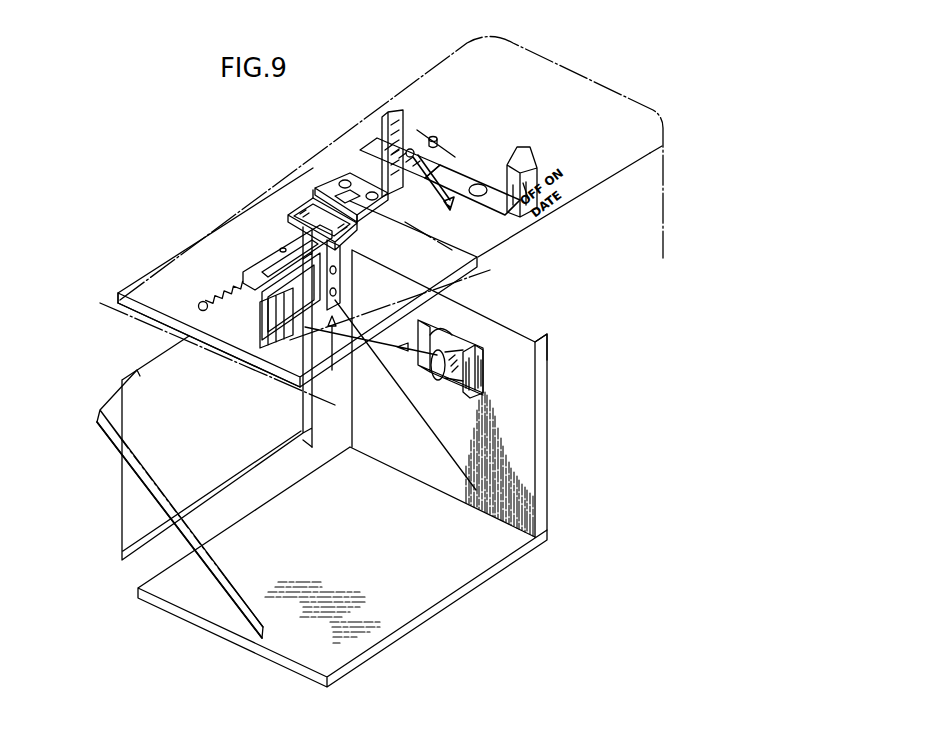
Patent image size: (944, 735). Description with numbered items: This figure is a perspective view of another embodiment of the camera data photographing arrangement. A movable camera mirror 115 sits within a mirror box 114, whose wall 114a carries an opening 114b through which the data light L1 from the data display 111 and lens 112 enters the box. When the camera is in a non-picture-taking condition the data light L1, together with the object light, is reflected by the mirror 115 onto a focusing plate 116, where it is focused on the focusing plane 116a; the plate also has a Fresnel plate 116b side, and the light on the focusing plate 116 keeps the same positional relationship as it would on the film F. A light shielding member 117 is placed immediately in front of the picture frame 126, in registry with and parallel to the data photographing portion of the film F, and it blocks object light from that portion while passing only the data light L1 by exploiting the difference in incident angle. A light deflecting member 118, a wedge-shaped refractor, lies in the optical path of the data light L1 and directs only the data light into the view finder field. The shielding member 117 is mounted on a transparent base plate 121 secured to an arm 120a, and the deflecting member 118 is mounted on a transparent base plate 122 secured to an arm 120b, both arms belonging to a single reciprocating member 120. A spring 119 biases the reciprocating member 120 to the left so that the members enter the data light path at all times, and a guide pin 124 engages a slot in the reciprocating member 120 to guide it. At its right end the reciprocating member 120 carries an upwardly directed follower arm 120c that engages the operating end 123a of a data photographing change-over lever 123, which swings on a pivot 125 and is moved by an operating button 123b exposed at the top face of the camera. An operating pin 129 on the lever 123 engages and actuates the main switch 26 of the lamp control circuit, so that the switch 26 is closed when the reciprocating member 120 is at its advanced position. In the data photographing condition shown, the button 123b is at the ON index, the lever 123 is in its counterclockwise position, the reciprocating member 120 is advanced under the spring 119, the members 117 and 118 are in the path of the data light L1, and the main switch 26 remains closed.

The main switch 26 is at (430, 185).
The date display 111 is at (470, 398).
The lens 112 is at (435, 372).
The mirror box 114 is at (528, 434).
The wall edge 114a is at (548, 338).
The window opening 114b is at (433, 333).
The movable camera mirror 115 is at (243, 573).
The focusing plate 116 is at (178, 253).
The focusing plane 116a is at (168, 333).
The Fresnel plate 116b is at (140, 300).
The light shielding member 117 is at (272, 350).
The light deflecting member 118 is at (352, 235).
The spring 119 is at (237, 285).
The reciprocating member 120 is at (287, 222).
The arm 120a is at (343, 282).
The arm 120b is at (333, 185).
The follower arm 120c is at (388, 108).
The transparent base plate 121 is at (260, 332).
The transparent base plate 122 is at (300, 212).
The data photographing change-over lever 123 is at (462, 175).
The operating end 123a is at (374, 140).
The operating button 123b is at (516, 150).
The guide pin 124 is at (275, 248).
The pivot 125 is at (477, 198).
The picture frame 126 is at (137, 363).
The operating pin 129 is at (412, 150).
The film F is at (128, 503).
The data light L1 is at (390, 394).